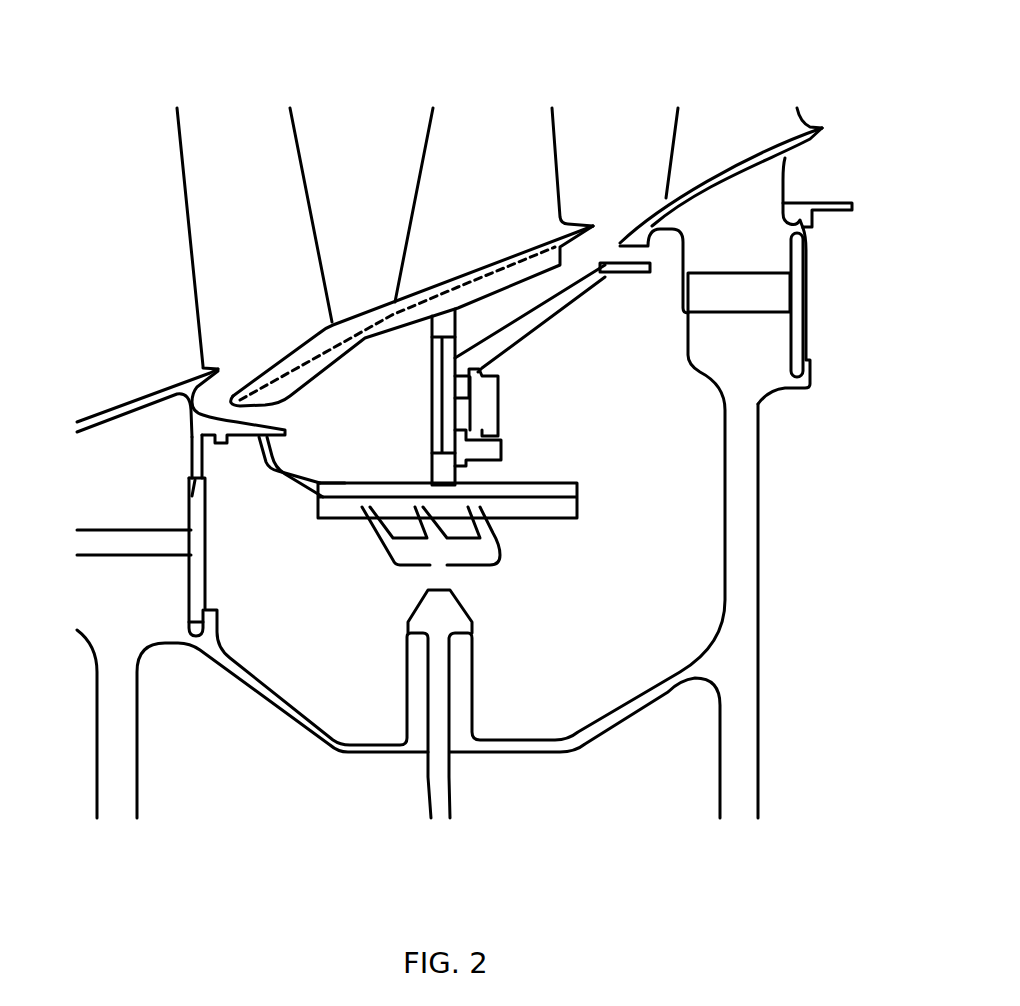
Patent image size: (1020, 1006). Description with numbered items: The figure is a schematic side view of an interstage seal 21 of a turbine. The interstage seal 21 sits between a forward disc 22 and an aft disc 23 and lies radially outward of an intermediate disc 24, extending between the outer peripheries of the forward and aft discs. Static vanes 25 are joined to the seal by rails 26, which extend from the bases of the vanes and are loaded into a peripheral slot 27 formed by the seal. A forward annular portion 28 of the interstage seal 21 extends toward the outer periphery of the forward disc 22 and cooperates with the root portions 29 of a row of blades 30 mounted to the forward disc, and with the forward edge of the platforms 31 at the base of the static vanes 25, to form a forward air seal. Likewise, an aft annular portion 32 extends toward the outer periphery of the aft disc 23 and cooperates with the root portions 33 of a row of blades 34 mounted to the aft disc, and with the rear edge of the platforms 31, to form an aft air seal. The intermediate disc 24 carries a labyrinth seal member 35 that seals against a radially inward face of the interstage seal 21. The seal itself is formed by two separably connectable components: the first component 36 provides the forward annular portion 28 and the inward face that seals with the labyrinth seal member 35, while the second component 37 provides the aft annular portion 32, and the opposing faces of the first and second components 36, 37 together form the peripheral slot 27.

The interstage seal 21 is at (614, 492).
The forward disc 22 is at (107, 775).
The aft disc 23 is at (748, 736).
The intermediate disc 24 is at (445, 778).
The static vanes 25 is at (477, 236).
The rails 26 is at (431, 357).
The peripheral slot 27 is at (457, 398).
The forward annular portion 28 is at (286, 485).
The root portions 29 is at (205, 423).
The blades 30 is at (135, 364).
The platforms 31 is at (397, 300).
The aft annular portion 32 is at (601, 263).
The root portions 33 is at (658, 220).
The blades 34 is at (759, 124).
The labyrinth seal member 35 is at (500, 555).
The first component 36 is at (333, 486).
The second component 37 is at (503, 353).